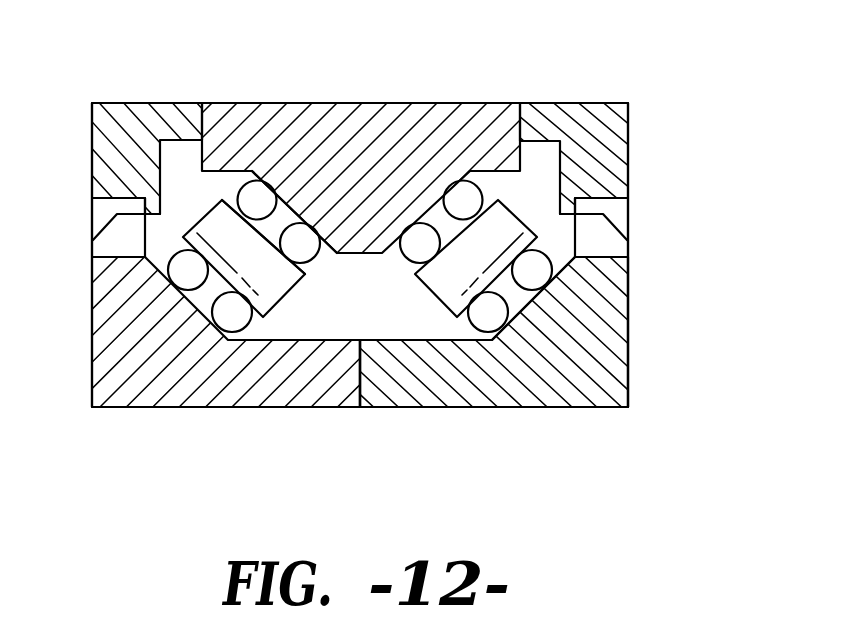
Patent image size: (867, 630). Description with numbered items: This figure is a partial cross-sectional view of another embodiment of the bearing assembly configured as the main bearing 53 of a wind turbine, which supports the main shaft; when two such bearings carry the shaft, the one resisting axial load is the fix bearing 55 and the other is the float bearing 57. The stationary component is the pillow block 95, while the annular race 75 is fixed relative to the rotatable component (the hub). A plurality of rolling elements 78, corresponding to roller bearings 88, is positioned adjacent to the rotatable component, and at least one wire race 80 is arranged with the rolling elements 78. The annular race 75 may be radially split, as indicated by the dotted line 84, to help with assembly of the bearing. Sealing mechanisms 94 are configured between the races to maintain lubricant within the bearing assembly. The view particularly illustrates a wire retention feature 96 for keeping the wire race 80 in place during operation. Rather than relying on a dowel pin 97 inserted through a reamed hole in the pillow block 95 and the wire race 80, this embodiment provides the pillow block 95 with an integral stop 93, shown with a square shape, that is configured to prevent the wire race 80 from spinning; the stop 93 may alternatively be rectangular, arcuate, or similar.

The main bearing 53 is at (439, 214).
The fix bearing 55 is at (493, 410).
The float bearing 57 is at (494, 332).
The annular race 75 is at (222, 410).
The rolling elements 78 is at (262, 187).
The wire race 80 is at (228, 318).
The dotted line 84 is at (357, 398).
The roller bearings 88 is at (265, 190).
The integral stop 93 is at (227, 228).
The sealing mechanisms 94 is at (114, 214).
The pillow block 95 is at (445, 102).
The wire retention feature 96 is at (288, 192).
The dowel pin 97 is at (248, 245).